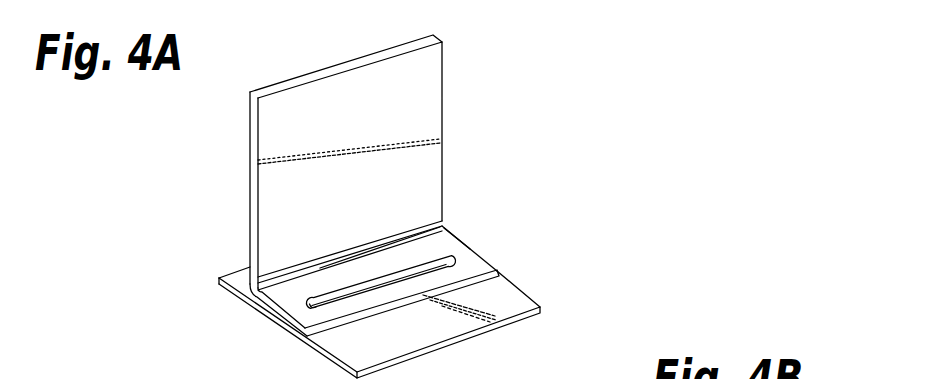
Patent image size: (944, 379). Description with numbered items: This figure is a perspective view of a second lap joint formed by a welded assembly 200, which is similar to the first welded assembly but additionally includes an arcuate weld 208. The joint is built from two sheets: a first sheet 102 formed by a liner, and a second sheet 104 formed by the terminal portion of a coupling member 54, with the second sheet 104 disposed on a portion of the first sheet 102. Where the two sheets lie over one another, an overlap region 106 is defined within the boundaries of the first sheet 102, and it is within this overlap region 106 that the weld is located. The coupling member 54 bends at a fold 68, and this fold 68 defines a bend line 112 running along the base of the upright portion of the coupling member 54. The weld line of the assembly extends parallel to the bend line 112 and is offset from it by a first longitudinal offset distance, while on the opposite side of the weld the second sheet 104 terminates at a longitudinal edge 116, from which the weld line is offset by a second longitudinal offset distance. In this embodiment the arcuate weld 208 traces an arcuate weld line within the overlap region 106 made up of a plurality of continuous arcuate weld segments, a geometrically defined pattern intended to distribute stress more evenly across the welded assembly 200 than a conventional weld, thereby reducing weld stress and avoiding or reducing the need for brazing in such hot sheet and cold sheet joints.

The welded assembly 200 is at (415, 189).
The coupling member 54 is at (287, 140).
The fold 68 is at (474, 216).
The first sheet 102 is at (500, 300).
The second sheet 104 is at (476, 266).
The overlap region 106 is at (240, 322).
The bend line 112 is at (296, 276).
The longitudinal edge 116 is at (360, 317).
The arcuate weld 208 is at (373, 273).